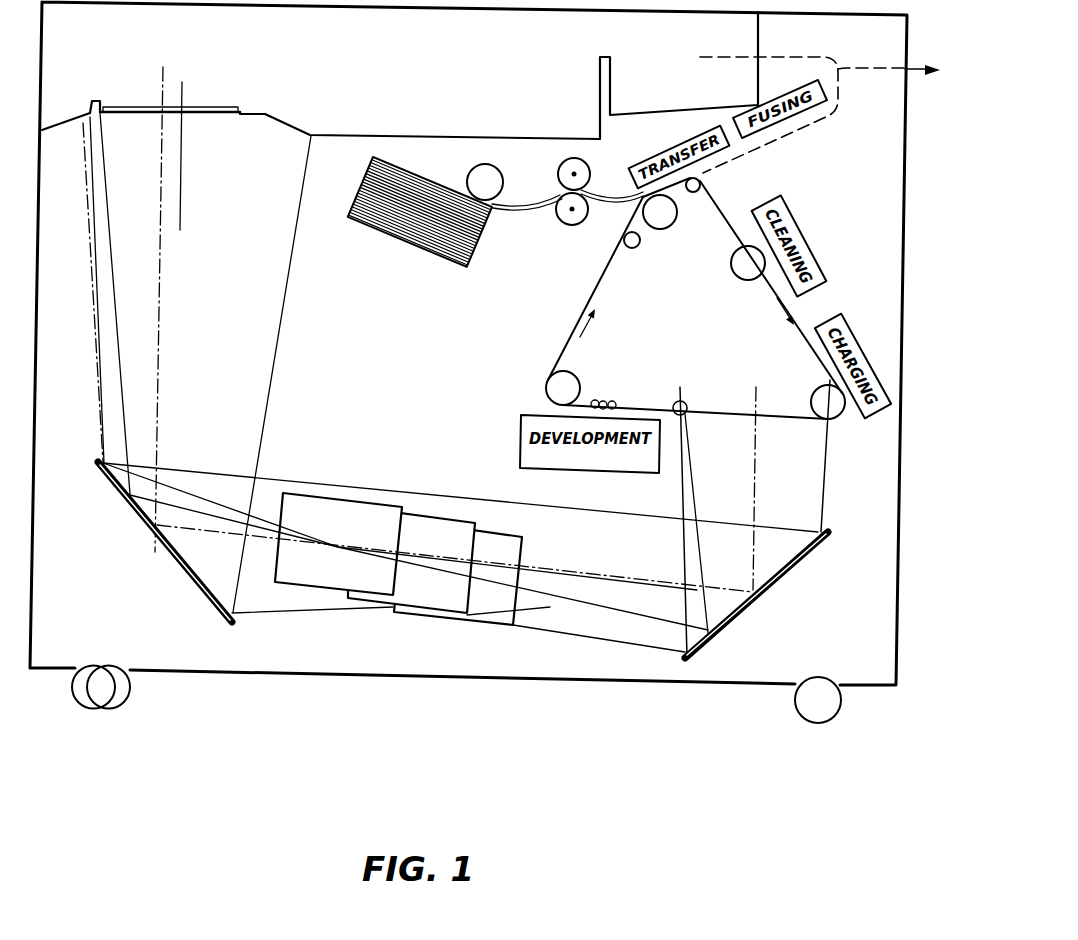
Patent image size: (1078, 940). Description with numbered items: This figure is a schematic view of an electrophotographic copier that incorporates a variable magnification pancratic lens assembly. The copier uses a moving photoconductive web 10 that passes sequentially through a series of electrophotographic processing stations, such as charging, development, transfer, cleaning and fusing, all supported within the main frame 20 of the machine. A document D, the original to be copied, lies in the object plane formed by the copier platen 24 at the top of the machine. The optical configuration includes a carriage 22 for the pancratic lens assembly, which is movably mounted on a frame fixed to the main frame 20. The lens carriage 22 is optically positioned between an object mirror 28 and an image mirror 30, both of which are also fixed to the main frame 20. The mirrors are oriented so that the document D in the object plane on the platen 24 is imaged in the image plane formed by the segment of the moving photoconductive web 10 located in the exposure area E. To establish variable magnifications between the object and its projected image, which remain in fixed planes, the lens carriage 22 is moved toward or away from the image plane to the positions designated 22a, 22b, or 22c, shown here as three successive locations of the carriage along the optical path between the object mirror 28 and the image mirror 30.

The photoconductive web 10 is at (604, 272).
The main frame 20 is at (909, 204).
The carriage 22 is at (398, 541).
The lens carriage position 22a is at (338, 547).
The lens carriage position 22b is at (402, 562).
The lens carriage position 22c is at (455, 572).
The copier platen 24 is at (250, 107).
The object mirror 28 is at (122, 475).
The image mirror 30 is at (803, 547).
The document D is at (200, 107).
The exposure area E is at (828, 418).